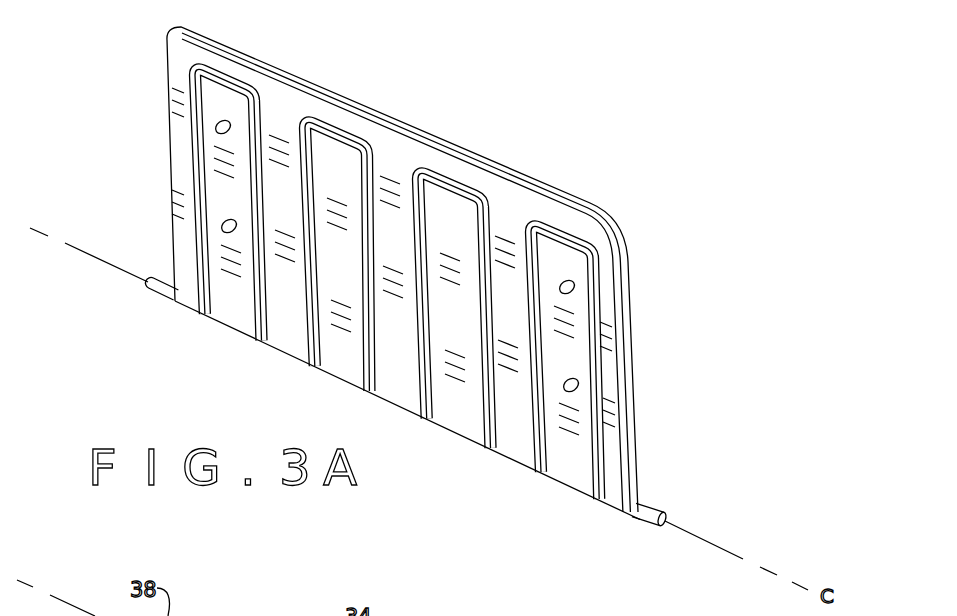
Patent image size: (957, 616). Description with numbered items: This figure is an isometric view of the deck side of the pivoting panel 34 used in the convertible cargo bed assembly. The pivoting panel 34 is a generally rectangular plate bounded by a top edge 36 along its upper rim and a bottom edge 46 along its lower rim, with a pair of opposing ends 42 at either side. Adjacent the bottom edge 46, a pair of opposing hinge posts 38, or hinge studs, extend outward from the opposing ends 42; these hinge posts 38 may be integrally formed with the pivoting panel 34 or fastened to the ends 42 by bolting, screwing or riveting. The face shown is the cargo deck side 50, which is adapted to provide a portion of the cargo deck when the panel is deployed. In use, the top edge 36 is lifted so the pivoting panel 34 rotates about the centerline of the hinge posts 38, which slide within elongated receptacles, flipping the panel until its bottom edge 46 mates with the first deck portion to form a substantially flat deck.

The pivoting panel 34 is at (443, 101).
The top edge 36 is at (497, 166).
The hinge posts 38 is at (163, 290).
The opposing ends 42 is at (184, 200).
The bottom edge 46 is at (407, 415).
The cargo deck side 50 is at (395, 178).